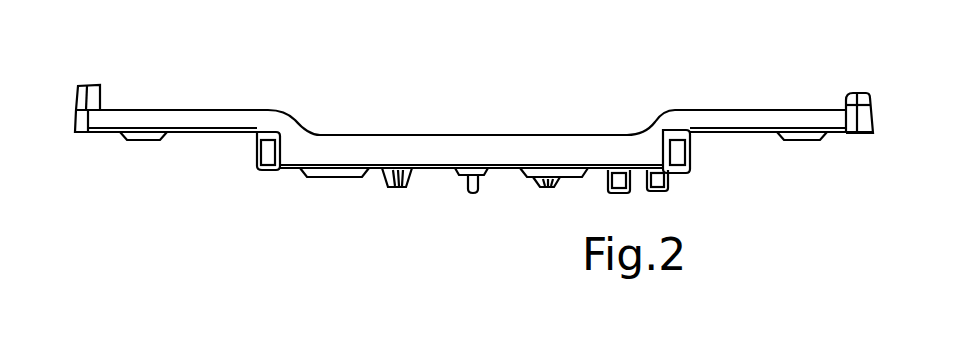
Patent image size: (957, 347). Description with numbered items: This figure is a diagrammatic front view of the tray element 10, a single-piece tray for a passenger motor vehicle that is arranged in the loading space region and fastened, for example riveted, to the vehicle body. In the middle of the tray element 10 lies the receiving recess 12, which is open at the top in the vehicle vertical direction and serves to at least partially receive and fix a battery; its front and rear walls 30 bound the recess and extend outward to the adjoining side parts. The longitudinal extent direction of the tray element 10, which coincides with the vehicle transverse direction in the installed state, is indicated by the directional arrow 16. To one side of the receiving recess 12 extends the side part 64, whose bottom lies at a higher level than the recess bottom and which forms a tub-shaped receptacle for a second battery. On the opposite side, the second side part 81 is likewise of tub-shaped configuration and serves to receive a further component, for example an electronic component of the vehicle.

The tray element 10 is at (667, 115).
The receiving recess 12 is at (518, 118).
The wall 30 is at (581, 152).
The directional arrow 16 is at (397, 97).
The side part 64 is at (193, 145).
The second side part 81 is at (748, 145).